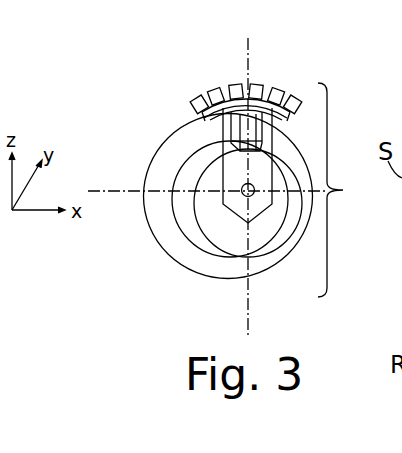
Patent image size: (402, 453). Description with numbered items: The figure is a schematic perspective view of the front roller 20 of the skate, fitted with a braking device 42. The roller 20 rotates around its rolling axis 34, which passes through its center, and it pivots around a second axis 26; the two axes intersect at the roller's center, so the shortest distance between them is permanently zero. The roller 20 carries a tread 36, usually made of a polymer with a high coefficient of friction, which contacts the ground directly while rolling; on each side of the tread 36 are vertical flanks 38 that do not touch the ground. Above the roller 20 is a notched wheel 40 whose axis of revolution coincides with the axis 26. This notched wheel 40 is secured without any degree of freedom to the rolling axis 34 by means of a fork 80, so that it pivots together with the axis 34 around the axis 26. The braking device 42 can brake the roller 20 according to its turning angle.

The roller 20 is at (351, 190).
The axis 26 is at (248, 48).
The rolling axis 34 is at (102, 191).
The tread 36 is at (160, 220).
The vertical flanks 38 is at (213, 193).
The notched wheel 40 is at (235, 88).
The braking device 42 is at (254, 128).
The fork 80 is at (257, 207).